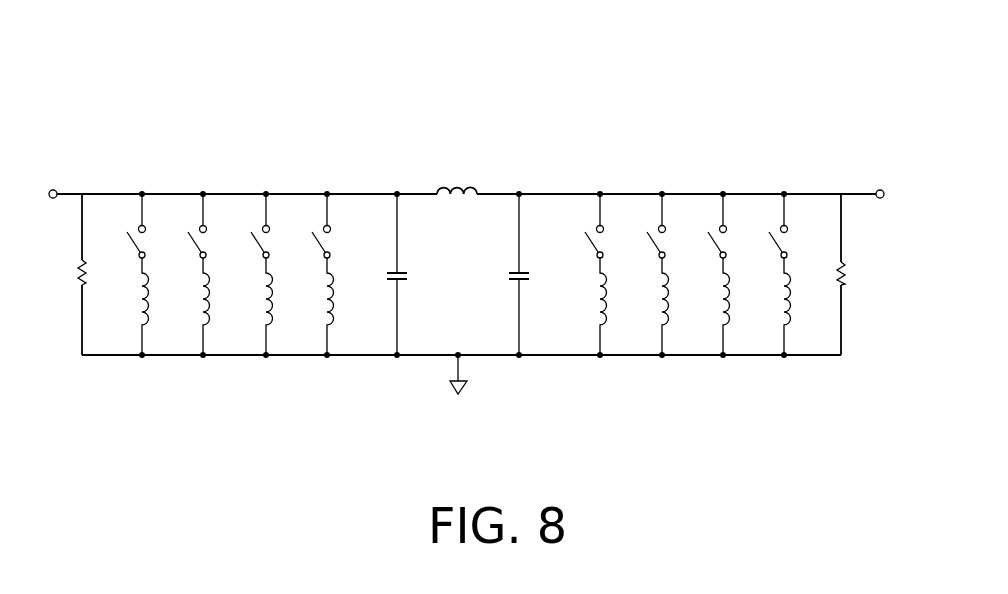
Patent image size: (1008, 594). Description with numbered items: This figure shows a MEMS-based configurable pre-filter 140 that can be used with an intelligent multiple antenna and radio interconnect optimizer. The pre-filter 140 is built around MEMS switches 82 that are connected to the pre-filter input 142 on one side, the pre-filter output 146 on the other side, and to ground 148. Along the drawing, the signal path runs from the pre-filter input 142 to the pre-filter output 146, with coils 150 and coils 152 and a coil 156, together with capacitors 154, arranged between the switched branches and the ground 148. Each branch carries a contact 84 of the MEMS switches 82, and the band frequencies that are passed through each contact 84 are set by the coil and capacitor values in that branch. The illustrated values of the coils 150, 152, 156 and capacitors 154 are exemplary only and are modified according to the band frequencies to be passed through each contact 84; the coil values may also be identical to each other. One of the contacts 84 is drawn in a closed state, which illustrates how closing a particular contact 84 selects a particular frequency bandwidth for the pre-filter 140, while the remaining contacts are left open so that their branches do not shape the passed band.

The MEMS-based pre-filter 140 is at (381, 103).
The MEMS switches 82 is at (200, 186).
The contact 84 is at (329, 245).
The pre-filter input 142 is at (67, 192).
The pre-filter output 146 is at (868, 168).
The ground 148 is at (450, 389).
The coils 150 is at (443, 299).
The coils 152 is at (82, 282).
The capacitors 154 is at (389, 281).
The coil 156 is at (462, 186).